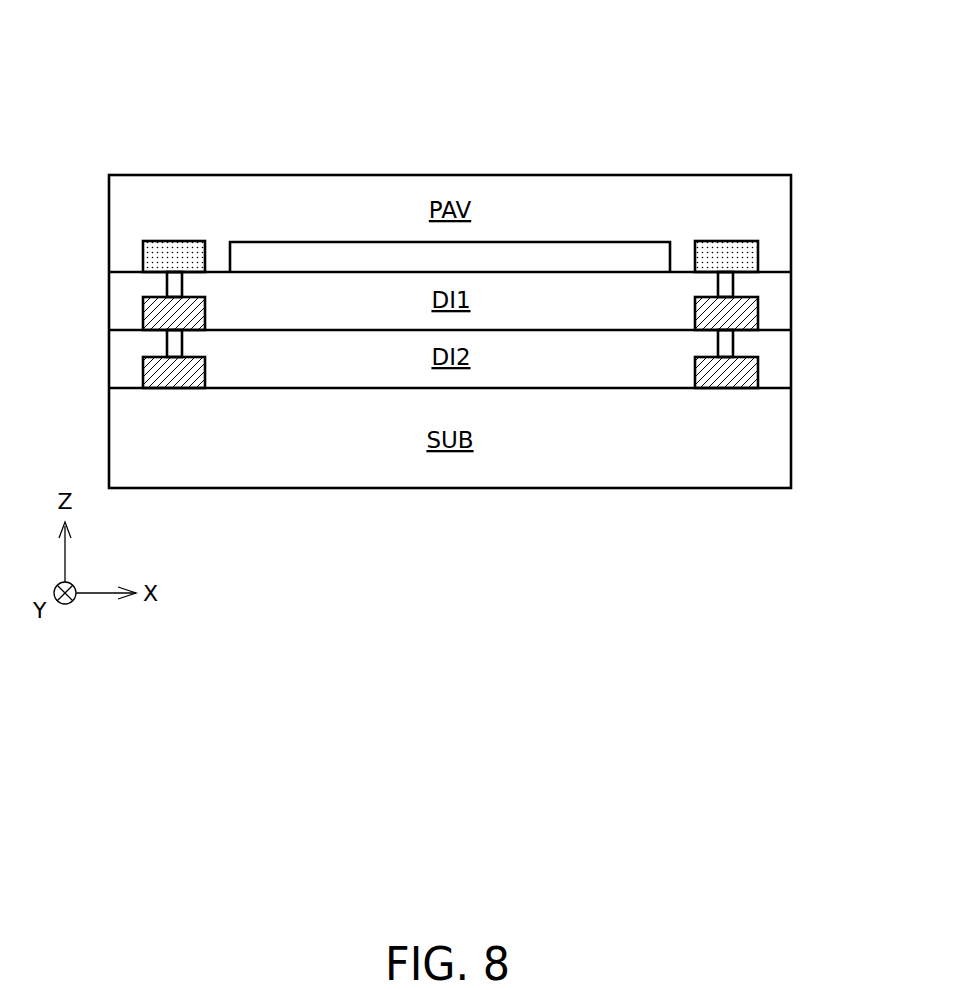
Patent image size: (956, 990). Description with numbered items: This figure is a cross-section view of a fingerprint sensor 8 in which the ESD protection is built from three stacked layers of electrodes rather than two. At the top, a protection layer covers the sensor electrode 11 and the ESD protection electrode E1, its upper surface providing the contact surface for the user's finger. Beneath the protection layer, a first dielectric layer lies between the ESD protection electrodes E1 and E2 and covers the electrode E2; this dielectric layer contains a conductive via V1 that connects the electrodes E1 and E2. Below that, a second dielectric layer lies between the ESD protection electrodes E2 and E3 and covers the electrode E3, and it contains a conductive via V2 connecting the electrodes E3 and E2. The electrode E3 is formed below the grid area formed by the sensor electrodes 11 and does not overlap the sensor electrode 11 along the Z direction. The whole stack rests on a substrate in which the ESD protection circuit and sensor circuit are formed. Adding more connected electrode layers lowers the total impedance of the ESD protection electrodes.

The fingerprint sensor 8 is at (754, 78).
The sensor electrode 11 is at (556, 253).
The ESD protection electrode E1 is at (172, 252).
The ESD protection electrode E2 is at (733, 312).
The ESD protection electrode E3 is at (185, 378).
The conductive via V1 is at (728, 288).
The conductive via V2 is at (728, 343).